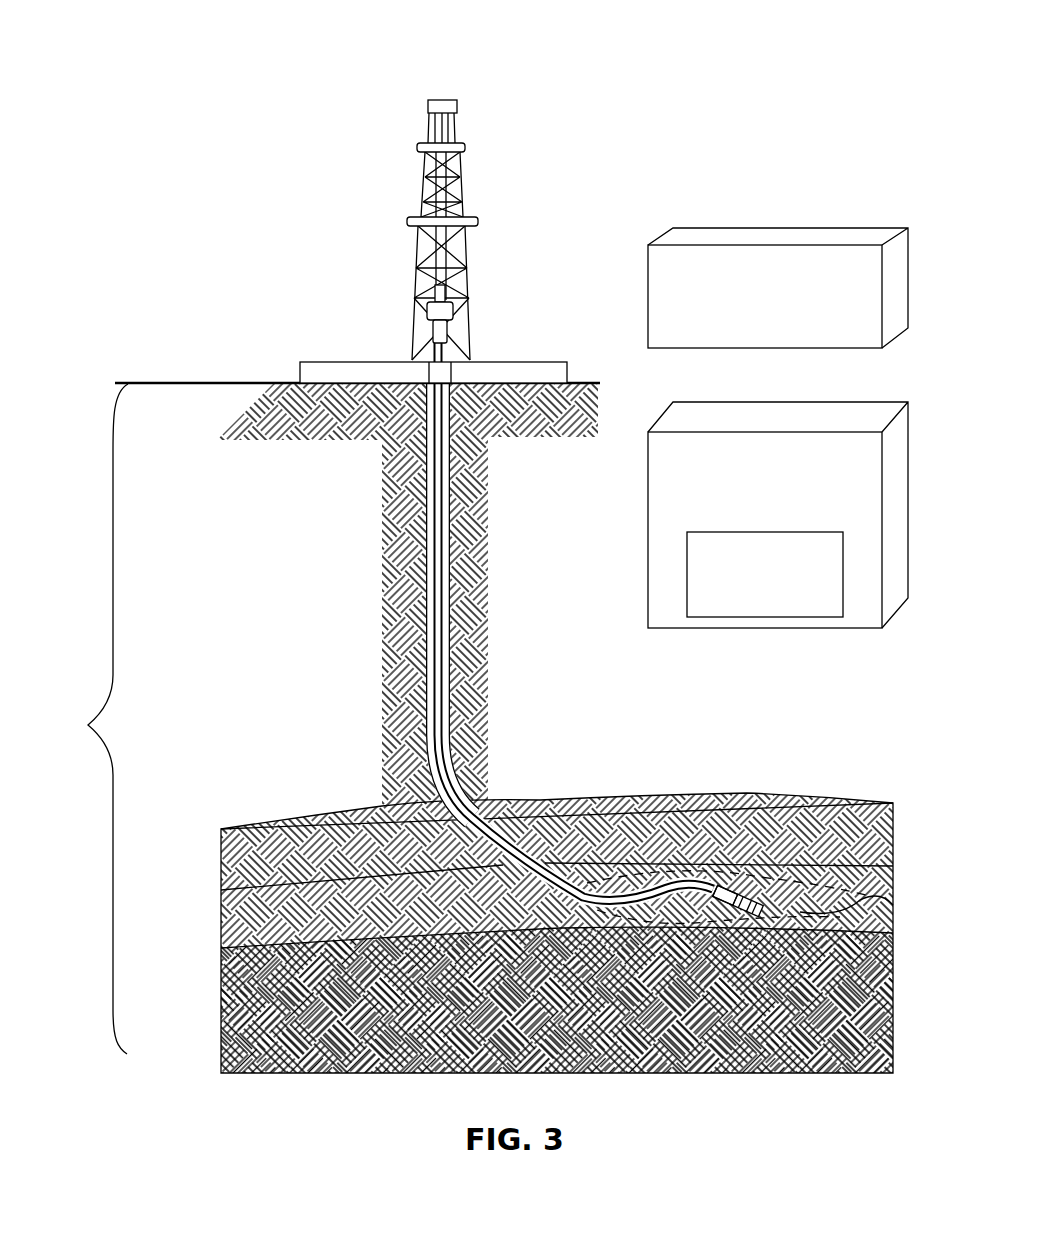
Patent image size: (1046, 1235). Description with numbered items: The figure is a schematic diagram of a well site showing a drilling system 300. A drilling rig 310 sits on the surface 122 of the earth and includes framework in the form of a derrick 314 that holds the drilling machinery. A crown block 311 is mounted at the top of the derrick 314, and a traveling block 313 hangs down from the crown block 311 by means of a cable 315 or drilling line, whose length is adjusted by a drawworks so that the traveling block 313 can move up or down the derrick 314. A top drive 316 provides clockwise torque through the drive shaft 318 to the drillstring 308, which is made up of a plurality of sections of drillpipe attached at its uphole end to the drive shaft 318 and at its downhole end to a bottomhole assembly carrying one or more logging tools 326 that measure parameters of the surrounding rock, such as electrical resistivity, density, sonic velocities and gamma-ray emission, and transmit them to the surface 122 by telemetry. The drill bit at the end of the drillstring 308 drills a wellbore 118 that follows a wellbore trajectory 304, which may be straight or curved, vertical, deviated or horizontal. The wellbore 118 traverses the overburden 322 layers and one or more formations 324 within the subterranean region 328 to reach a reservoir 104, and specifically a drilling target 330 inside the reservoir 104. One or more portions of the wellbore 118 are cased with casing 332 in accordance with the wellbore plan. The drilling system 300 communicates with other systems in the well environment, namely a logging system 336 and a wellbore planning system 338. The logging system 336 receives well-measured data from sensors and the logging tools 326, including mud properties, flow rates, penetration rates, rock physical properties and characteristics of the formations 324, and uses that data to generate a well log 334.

The drilling system 300 is at (538, 51).
The crown block 311 is at (427, 104).
The drilling rig 310 is at (466, 149).
The derrick 314 is at (460, 190).
The cable 315 is at (426, 190).
The traveling block 313 is at (465, 290).
The top drive 316 is at (427, 310).
The drive shaft 318 is at (432, 332).
The surface 122 is at (196, 382).
The overburden 322 is at (285, 501).
The drillstring 308 is at (438, 606).
The casing 332 is at (455, 697).
The subterranean region 328 is at (86, 719).
The formation 324 is at (312, 822).
The reservoir 104 is at (228, 910).
The wellbore 118 is at (546, 862).
The logging tool 326 is at (705, 832).
The wellbore trajectory 304 is at (818, 897).
The drilling target 330 is at (893, 932).
The wellbore planning system 338 is at (778, 288).
The logging system 336 is at (778, 515).
The well log 334 is at (765, 574).